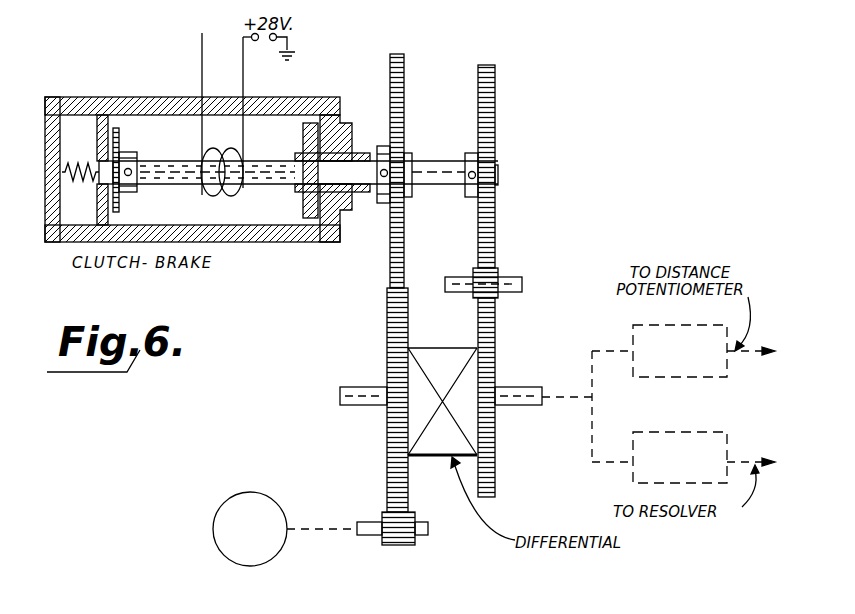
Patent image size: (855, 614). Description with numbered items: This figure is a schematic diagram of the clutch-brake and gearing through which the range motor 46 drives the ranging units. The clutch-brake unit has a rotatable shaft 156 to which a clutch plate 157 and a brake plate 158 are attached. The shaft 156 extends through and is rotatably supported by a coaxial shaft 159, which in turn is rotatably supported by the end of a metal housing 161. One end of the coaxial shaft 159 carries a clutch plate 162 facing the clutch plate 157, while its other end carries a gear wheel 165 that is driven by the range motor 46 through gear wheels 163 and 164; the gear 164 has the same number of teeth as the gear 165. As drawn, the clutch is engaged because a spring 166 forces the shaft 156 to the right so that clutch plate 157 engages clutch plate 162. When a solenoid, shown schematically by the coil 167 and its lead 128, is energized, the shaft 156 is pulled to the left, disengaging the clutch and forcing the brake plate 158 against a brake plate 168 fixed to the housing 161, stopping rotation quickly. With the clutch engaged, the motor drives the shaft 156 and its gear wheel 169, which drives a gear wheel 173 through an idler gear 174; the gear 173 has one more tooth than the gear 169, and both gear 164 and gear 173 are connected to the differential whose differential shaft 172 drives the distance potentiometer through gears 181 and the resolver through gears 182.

The range motor 46 is at (254, 493).
The wire / lead 128 is at (202, 46).
The rotatable shaft 156 is at (176, 185).
The clutch plate 157 is at (303, 140).
The brake plate 158 is at (119, 144).
The coaxial shaft 159 is at (358, 156).
The metal housing 161 is at (293, 100).
The clutch plate 162 is at (319, 122).
The gear wheel 163 is at (396, 546).
The gear wheel 164 is at (388, 346).
The gear wheel 165 is at (404, 67).
The spring 166 is at (62, 170).
The coil 167 is at (238, 193).
The brake plate 168 is at (111, 126).
The gear wheel 169 is at (496, 93).
The differential shaft 172 is at (352, 387).
The gear wheel 173 is at (498, 333).
The idler gear 174 is at (499, 275).
The gears 181 is at (707, 381).
The gears 182 is at (668, 432).